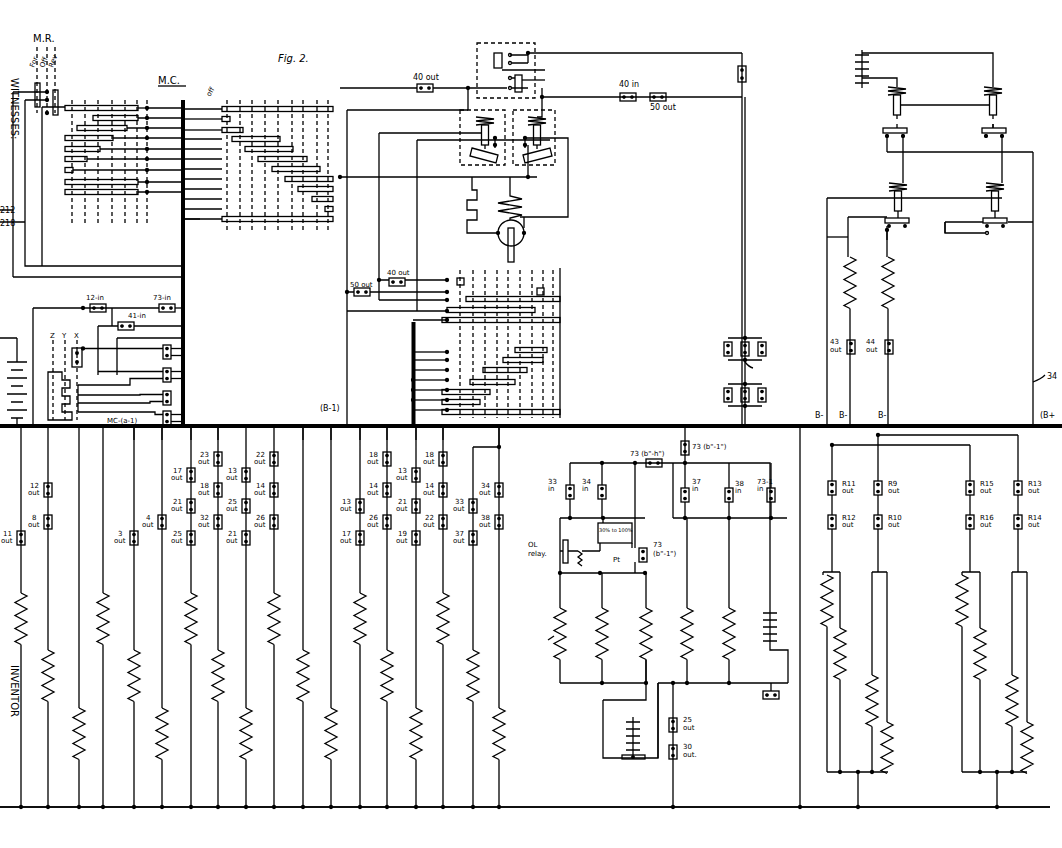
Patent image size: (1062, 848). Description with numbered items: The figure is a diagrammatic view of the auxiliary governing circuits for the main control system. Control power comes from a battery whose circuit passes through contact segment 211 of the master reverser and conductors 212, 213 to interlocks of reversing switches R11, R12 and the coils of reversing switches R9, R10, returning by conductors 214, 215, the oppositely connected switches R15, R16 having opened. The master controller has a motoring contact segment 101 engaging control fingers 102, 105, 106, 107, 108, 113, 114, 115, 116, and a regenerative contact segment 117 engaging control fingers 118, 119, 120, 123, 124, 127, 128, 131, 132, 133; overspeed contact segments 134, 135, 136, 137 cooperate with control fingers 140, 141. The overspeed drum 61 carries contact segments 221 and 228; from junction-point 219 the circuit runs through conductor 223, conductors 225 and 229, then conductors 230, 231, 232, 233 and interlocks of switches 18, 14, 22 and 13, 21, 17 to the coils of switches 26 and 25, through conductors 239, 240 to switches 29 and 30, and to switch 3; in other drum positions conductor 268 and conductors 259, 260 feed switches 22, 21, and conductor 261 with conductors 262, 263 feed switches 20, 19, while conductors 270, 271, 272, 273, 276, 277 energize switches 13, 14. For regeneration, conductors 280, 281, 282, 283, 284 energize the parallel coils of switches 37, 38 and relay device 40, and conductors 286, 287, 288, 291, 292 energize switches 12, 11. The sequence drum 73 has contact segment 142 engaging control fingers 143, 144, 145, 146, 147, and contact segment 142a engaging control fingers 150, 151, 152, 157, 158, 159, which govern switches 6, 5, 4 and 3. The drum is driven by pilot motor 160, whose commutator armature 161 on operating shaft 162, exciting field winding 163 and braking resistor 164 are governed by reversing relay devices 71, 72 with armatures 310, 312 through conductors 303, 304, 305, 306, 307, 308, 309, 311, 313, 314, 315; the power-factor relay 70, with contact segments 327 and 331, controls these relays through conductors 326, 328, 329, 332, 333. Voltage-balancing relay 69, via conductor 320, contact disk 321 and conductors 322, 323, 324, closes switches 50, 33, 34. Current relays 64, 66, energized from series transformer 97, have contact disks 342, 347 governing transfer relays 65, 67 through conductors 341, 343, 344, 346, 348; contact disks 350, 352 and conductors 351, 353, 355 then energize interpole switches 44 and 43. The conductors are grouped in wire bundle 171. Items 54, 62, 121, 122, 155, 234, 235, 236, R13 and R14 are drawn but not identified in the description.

The switch 3 is at (30, 622).
The switch 4 is at (57, 678).
The switch 5 is at (88, 738).
The switch 6 is at (112, 622).
The switch 11 is at (143, 678).
The switch 12 is at (171, 738).
The switch 13 is at (200, 622).
The switch 14 is at (227, 678).
The switch 17 is at (255, 738).
The switch 18 is at (283, 622).
The switch 19 is at (312, 678).
The switch 20 is at (340, 738).
The switch 21 is at (369, 622).
The switch 22 is at (396, 678).
The switch 25 is at (425, 738).
The switch 26 is at (452, 622).
The switch 29 is at (482, 678).
The switch 30 is at (508, 738).
The regenerative line switch 33 is at (596, 636).
The regenerative line switch 34 is at (640, 636).
The switch 37 is at (680, 638).
The switch 38 is at (722, 638).
The relay device 40 is at (767, 637).
The interpole field-regulating switch 43 is at (896, 288).
The interpole field-regulating switch 44 is at (840, 283).
The switch 50 is at (549, 634).
The conductor 54 is at (638, 672).
The overspeed controller 61 is at (50, 368).
The regenerating controller 62 is at (246, 259).
The interpole limit switch 64 is at (1003, 98).
The transfer relay 65 is at (990, 189).
The interpole limit switch 66 is at (908, 93).
The transfer relay 67 is at (888, 189).
The voltage-balancing relay 69 is at (630, 719).
The power-factor relay 70 is at (496, 59).
The reversing relay device 71 is at (534, 137).
The reversing relay device 72 is at (482, 137).
The sequence drum 73 is at (591, 372).
The series transformer 97 is at (856, 64).
The contact segment 101 is at (80, 197).
The control finger 102 is at (114, 105).
The control finger 105 is at (137, 115).
The control finger 106 is at (129, 125).
The control finger 107 is at (123, 135).
The control finger 108 is at (123, 146).
The control finger 113 is at (123, 156).
The control finger 114 is at (123, 167).
The control finger 115 is at (123, 179).
The control finger 116 is at (123, 189).
The contact segment 117 is at (311, 223).
The control finger 118 is at (203, 104).
The control finger 119 is at (211, 114).
The control finger 120 is at (211, 125).
The conductor 121 is at (203, 134).
The conductor 122 is at (203, 144).
The control finger 123 is at (203, 154).
The control finger 124 is at (203, 164).
The control finger 127 is at (203, 174).
The control finger 128 is at (203, 184).
The control finger 131 is at (203, 194).
The control finger 132 is at (203, 204).
The control finger 133 is at (203, 214).
The overspeed contact segment 134 is at (127, 350).
The overspeed contact segment 135 is at (134, 372).
The overspeed contact segment 136 is at (158, 395).
The overspeed contact segment 137 is at (158, 416).
The control fingers 140 is at (190, 409).
The control fingers 141 is at (190, 419).
The contact segment 142 is at (560, 300).
The contact segment 142a is at (547, 350).
The control finger 143 is at (427, 277).
The control finger 144 is at (409, 289).
The control finger 145 is at (414, 298).
The control finger 146 is at (431, 308).
The control finger 147 is at (431, 318).
The control finger 150 is at (432, 349).
The control finger 151 is at (432, 358).
The control finger 152 is at (432, 368).
The conductor 155 is at (432, 378).
The control finger 157 is at (432, 388).
The control finger 158 is at (432, 398).
The control finger 159 is at (432, 408).
The pilot motor 160 is at (580, 238).
The armature 161 is at (497, 239).
The operating shaft 162 is at (525, 239).
The exciting field winding 163 is at (518, 200).
The braking resistor 164 is at (467, 211).
The wire bundle 171 is at (257, 425).
The contact segment 211 is at (36, 85).
The conductor 212 is at (100, 277).
The conductor 213 is at (832, 445).
The conductor 214 is at (826, 806).
The conductor 215 is at (800, 742).
The junction-point 219 is at (33, 312).
The contact segment 221 is at (84, 357).
The conductor 223 is at (143, 302).
The conductor 225 is at (181, 308).
The contact segment 228 is at (54, 396).
The conductor 229 is at (120, 381).
The conductor 230 is at (190, 348).
The conductor 231 is at (190, 358).
The conductor 232 is at (453, 434).
The conductor 233 is at (426, 434).
The conductor 234 is at (120, 391).
The conductor 235 is at (190, 375).
The conductor 236 is at (190, 385).
The conductor 239 is at (164, 104).
The conductor 240 is at (509, 436).
The conductor 259 is at (397, 434).
The conductor 260 is at (370, 434).
The conductor 261 is at (120, 410).
The conductor 262 is at (341, 434).
The conductor 263 is at (313, 434).
The conductor 268 is at (120, 400).
The conductor 270 is at (185, 330).
The conductor 271 is at (200, 222).
The conductor 272 is at (192, 114).
The conductor 273 is at (192, 125).
The conductor 276 is at (201, 434).
The conductor 277 is at (228, 434).
The conductor 280 is at (184, 101).
The conductor 281 is at (683, 435).
The conductor 282 is at (753, 464).
The conductor 283 is at (701, 519).
The conductor 284 is at (762, 697).
The conductor 286 is at (411, 402).
The conductor 287 is at (412, 392).
The conductor 288 is at (412, 382).
The conductor 291 is at (172, 434).
The conductor 292 is at (144, 434).
The conductor 303 is at (412, 322).
The conductor 304 is at (383, 313).
The conductor 305 is at (347, 244).
The conductor 306 is at (604, 98).
The conductor 307 is at (741, 180).
The conductor 308 is at (747, 414).
The conductor 309 is at (417, 246).
The armature 310 is at (537, 155).
The conductor 311 is at (539, 165).
The armature 312 is at (484, 155).
The conductor 313 is at (388, 182).
The conductor 314 is at (343, 347).
The conductor 315 is at (568, 182).
The conductor 320 is at (656, 760).
The contact disk 321 is at (633, 760).
The conductor 322 is at (602, 736).
The conductor 323 is at (609, 684).
The conductor 324 is at (602, 575).
The conductor 326 is at (542, 81).
The contact segment 327 is at (490, 60).
The conductor 328 is at (635, 56).
The conductor 329 is at (379, 230).
The contact segment 331 is at (526, 84).
The conductor 332 is at (532, 70).
The conductor 333 is at (378, 81).
The conductor 341 is at (986, 145).
The contact disk 342 is at (986, 129).
The conductor 343 is at (1006, 145).
The conductor 344 is at (930, 198).
The conductor 346 is at (944, 149).
The contact disk 347 is at (882, 145).
The conductor 348 is at (906, 142).
The contact disk 350 is at (995, 228).
The conductor 351 is at (950, 236).
The contact disk 352 is at (898, 226).
The conductor 353 is at (824, 238).
The conductor 355 is at (889, 237).
The reversing switch R9 is at (820, 597).
The reversing switch R10 is at (843, 634).
The reversing switch R11 is at (864, 672).
The reversing switch R12 is at (895, 745).
The resistor R13 is at (960, 603).
The resistor R14 is at (984, 638).
The reversing switch R15 is at (1003, 672).
The reversing switch R16 is at (1032, 740).